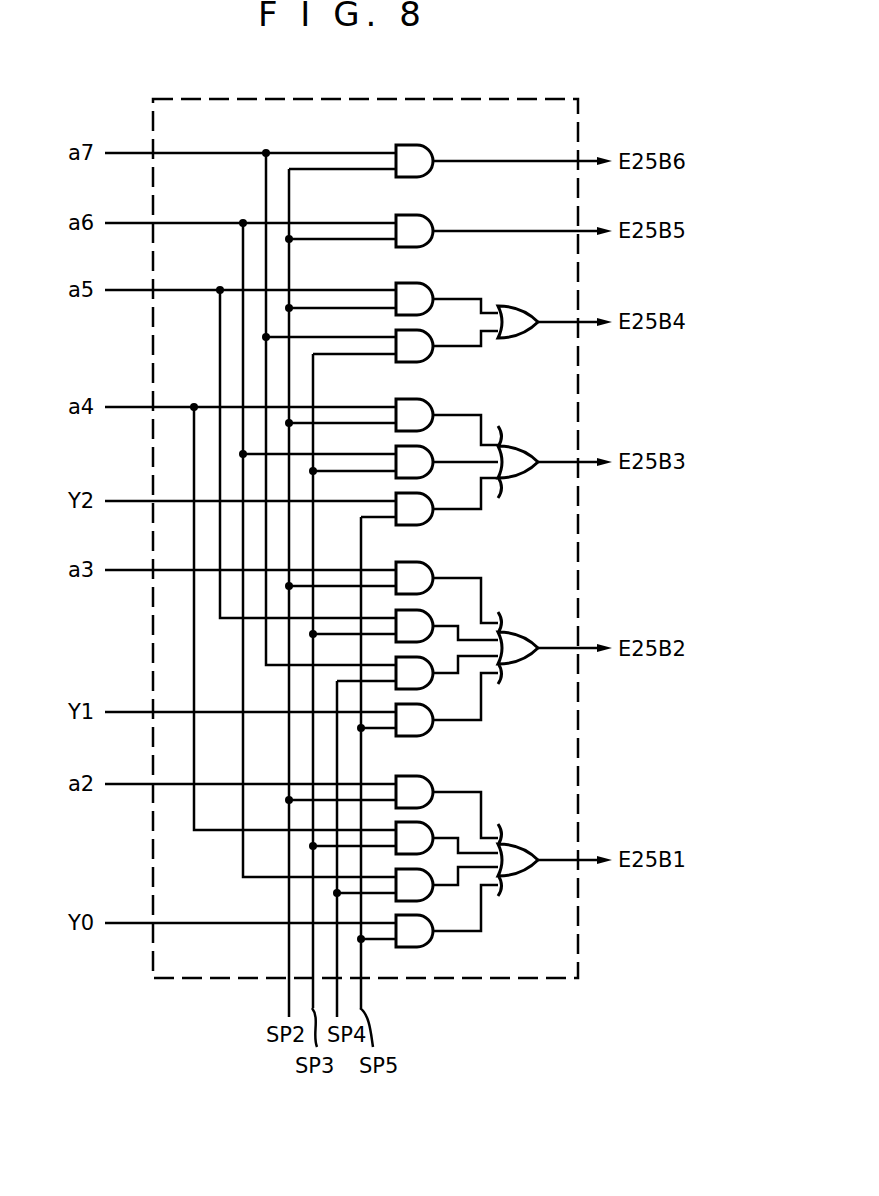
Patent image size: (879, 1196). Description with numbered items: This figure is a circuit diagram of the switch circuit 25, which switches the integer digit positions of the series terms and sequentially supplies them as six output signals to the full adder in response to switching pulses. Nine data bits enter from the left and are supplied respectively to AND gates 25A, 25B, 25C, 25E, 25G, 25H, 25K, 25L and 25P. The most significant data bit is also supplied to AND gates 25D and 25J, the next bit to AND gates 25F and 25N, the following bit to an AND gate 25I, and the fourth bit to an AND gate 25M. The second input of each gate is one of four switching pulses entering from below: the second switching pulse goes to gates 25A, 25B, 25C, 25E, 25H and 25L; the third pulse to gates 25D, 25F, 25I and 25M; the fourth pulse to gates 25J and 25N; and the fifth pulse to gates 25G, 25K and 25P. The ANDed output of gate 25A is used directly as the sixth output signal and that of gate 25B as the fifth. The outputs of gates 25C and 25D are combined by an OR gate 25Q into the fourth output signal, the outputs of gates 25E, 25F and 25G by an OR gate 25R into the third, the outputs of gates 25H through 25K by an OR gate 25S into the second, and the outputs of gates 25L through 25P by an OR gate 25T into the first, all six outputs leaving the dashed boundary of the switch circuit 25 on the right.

The switch circuit 25 is at (560, 98).
The AND gate 25A is at (427, 148).
The AND gate 25B is at (427, 219).
The AND gate 25C is at (427, 289).
The AND gate 25D is at (427, 357).
The AND gate 25E is at (427, 406).
The AND gate 25F is at (419, 455).
The AND gate 25G is at (419, 502).
The AND gate 25H is at (427, 569).
The AND gate 25I is at (419, 621).
The AND gate 25J is at (421, 685).
The AND gate 25K is at (427, 732).
The AND gate 25L is at (427, 780).
The AND gate 25M is at (419, 831).
The AND gate 25N is at (421, 897).
The AND gate 25P is at (427, 943).
The OR gate 25Q is at (524, 307).
The OR gate 25R is at (524, 447).
The OR gate 25S is at (524, 633).
The OR gate 25T is at (523, 845).